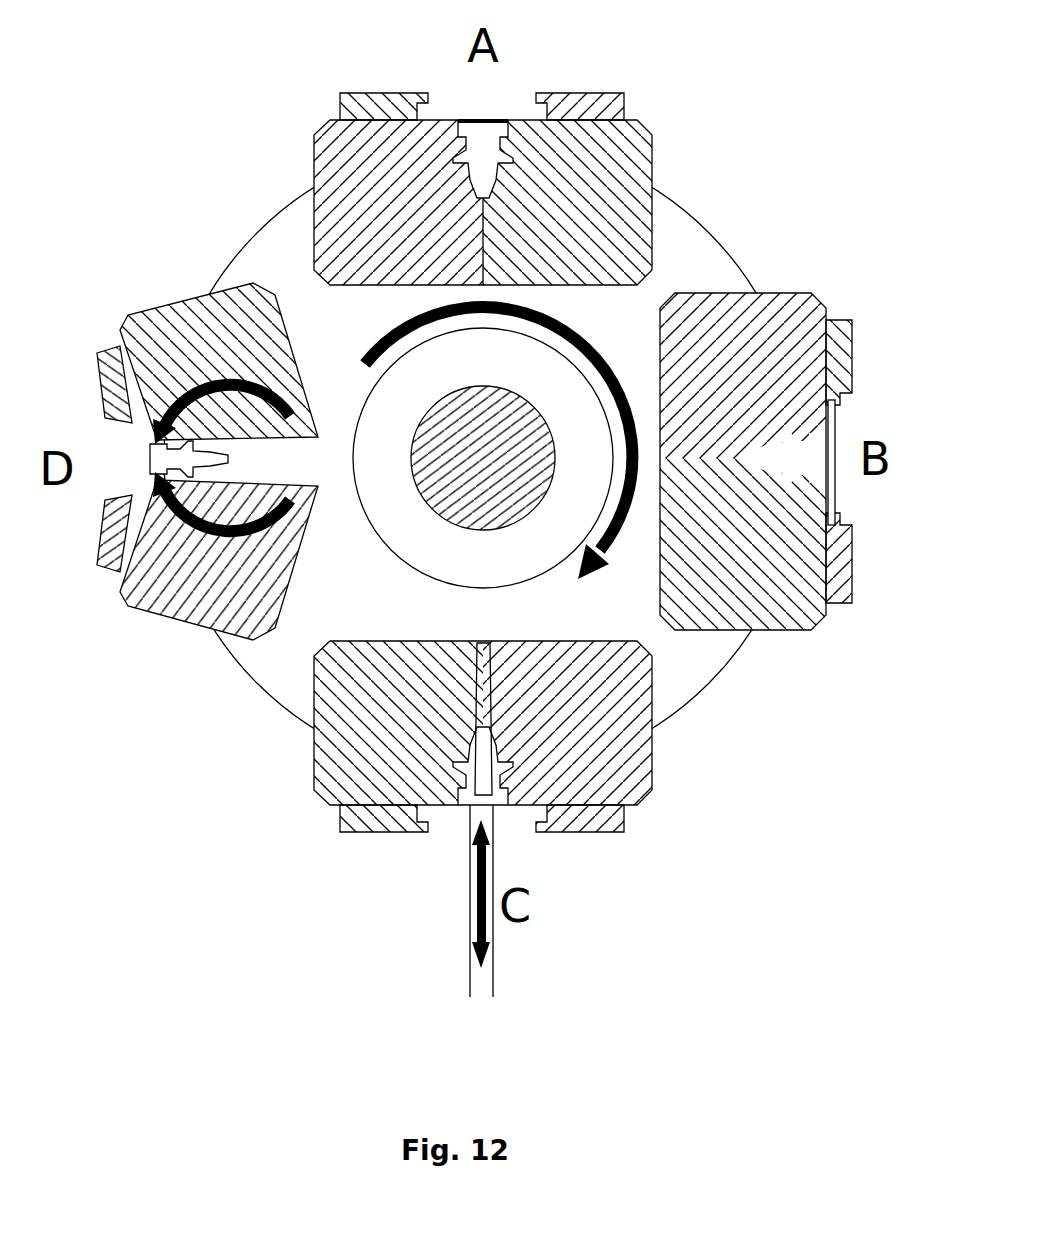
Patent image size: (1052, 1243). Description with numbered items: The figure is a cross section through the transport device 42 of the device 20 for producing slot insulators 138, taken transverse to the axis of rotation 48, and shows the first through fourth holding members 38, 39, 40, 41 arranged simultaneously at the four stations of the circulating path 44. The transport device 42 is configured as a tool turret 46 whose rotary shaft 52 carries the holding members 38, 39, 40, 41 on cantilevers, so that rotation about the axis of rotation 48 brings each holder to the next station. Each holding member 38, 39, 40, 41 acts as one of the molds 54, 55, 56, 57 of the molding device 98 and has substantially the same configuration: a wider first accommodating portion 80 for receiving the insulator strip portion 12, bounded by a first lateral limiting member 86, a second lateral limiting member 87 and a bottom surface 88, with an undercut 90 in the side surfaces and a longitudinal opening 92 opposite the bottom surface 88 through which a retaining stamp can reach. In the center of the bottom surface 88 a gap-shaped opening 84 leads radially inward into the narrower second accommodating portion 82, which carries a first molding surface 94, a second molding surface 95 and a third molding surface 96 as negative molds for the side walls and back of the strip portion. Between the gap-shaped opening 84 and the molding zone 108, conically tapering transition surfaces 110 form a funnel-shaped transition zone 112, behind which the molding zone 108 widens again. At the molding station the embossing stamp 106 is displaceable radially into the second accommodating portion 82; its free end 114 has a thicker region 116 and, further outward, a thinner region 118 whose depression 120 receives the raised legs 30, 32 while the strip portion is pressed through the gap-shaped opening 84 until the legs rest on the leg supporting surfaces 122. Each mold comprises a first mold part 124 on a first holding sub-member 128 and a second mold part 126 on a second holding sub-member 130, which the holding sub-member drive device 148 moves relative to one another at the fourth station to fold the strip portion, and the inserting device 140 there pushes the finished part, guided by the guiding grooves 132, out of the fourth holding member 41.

The insulator strip portion 12 is at (498, 728).
The device 20 is at (841, 831).
The raised leg 30 is at (530, 830).
The raised leg 32 is at (470, 792).
The first holding member 38 is at (328, 97).
The second holding member 39 is at (829, 613).
The third holding member 40 is at (646, 811).
The fourth holding member 41 is at (112, 606).
The transport device 42 is at (703, 697).
The circulating path 44 is at (594, 352).
The tool turret 46 is at (790, 192).
The axis of rotation 48 is at (480, 463).
The rotary shaft 52 is at (475, 475).
The first mold 54 is at (428, 152).
The second mold 55 is at (846, 598).
The third mold 56 is at (397, 830).
The fourth mold 57 is at (170, 603).
The first accommodating portion 80 is at (513, 110).
The second accommodating portion 82 is at (492, 147).
The gap-shaped opening 84 is at (482, 118).
The first lateral limiting member 86 is at (393, 105).
The second lateral limiting member 87 is at (605, 98).
The bottom surface 88 is at (438, 118).
The undercut 90 is at (573, 107).
The opening 92 is at (508, 110).
The first molding surface 94 is at (752, 452).
The second molding surface 95 is at (745, 466).
The third molding surface 96 is at (756, 478).
The molding device 98 is at (437, 160).
The embossing stamp 106 is at (491, 985).
The molding zone 108 is at (796, 480).
The transition surfaces 110 is at (816, 604).
The transition zone 112 is at (835, 440).
The free end 114 is at (480, 722).
The thicker region 116 is at (470, 746).
The thinner region 118 is at (462, 778).
The depression 120 is at (417, 810).
The leg supporting surfaces 122 is at (838, 428).
The first mold part 124 is at (440, 170).
The second mold part 126 is at (522, 177).
The first holding sub-member 128 is at (328, 205).
The second holding sub-member 130 is at (577, 212).
The guiding grooves 132 is at (190, 398).
The slot insulator 138 is at (430, 496).
The inserting device 140 is at (157, 467).
The holding sub-member drive device 148 is at (107, 373).